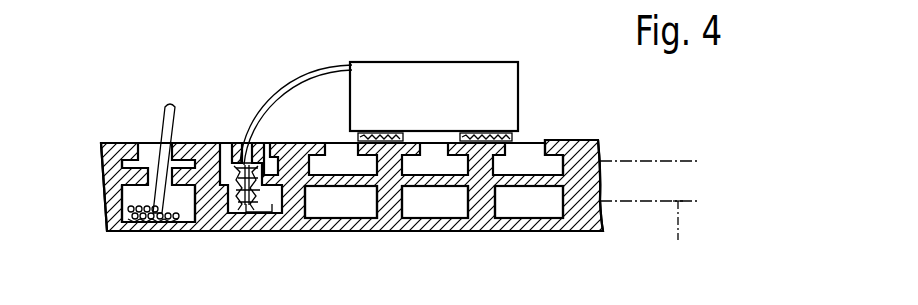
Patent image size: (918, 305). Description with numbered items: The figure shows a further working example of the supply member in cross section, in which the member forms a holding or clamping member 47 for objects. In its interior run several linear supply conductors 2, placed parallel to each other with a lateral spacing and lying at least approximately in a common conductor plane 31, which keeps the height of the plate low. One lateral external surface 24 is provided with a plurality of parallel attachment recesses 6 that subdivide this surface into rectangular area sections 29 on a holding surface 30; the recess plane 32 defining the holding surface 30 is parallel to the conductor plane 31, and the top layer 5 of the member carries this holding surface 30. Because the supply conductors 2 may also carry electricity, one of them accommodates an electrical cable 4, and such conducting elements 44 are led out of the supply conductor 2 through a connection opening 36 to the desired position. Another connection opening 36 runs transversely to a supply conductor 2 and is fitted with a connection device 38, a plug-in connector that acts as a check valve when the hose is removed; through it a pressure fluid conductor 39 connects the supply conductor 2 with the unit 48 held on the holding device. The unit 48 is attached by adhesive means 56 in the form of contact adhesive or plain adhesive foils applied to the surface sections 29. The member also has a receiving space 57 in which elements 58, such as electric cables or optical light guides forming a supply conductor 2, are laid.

The supply conductor 2 is at (188, 216).
The electrical cable 4 is at (157, 230).
The top layer 5 is at (580, 132).
The attachment recess 6 is at (345, 167).
The lateral external surface 24 is at (597, 134).
The area section 29 is at (560, 134).
The holding surface 30 is at (122, 134).
The conductor plane 31 is at (650, 237).
The recess plane 32 is at (649, 160).
The connection opening 36 is at (153, 206).
The connection device 38 is at (271, 88).
The pressure fluid conductor 39 is at (317, 71).
The conducting element 44 is at (178, 132).
The holding or clamping member 47 is at (589, 212).
The unit 48 is at (463, 78).
The adhesive means 56 is at (467, 133).
The receiving space 57 is at (128, 196).
The element 58 is at (155, 209).